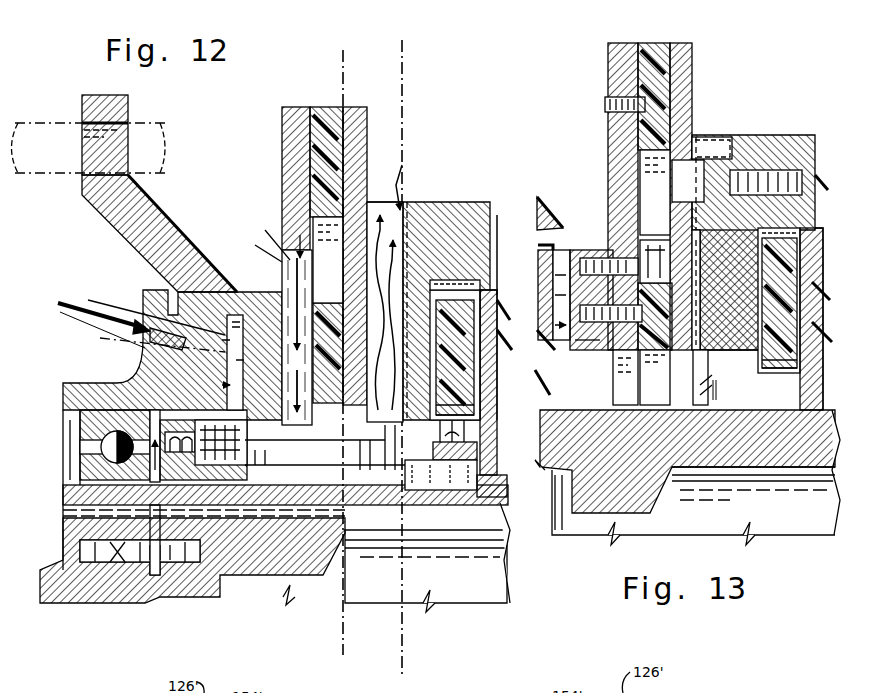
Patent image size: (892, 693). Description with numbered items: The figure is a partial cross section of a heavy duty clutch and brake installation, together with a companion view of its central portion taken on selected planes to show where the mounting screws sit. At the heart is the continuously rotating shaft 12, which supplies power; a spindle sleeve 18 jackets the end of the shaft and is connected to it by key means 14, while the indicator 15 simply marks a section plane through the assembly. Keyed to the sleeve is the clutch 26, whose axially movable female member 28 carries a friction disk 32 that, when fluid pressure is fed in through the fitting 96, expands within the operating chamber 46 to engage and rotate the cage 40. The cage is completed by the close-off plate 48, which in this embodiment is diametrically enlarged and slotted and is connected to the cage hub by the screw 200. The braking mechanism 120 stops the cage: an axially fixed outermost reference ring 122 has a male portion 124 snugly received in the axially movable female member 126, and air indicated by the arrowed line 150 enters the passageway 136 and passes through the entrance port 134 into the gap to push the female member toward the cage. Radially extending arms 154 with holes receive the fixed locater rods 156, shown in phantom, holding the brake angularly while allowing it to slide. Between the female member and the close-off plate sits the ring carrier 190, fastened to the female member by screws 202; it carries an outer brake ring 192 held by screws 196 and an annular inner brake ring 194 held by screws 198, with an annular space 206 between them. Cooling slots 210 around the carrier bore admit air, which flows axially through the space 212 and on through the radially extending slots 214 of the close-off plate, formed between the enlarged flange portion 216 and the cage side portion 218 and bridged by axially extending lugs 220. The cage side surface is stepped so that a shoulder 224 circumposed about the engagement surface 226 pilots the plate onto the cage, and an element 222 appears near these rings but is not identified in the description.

In FIG. 12, the shaft 12 is at (478, 603).
In FIG. 13, the shaft 12 is at (800, 535).
In FIG. 12, the key means 14 is at (360, 72).
In FIG. 12, the section line 15 is at (418, 45).
In FIG. 12, the spindle sleeve 18 is at (270, 560).
In FIG. 13, the spindle sleeve 18 is at (614, 465).
In FIG. 12, the clutch 26 is at (497, 305).
In FIG. 13, the clutch 26 is at (819, 245).
In FIG. 12, the female clutch member 28 is at (497, 350).
In FIG. 13, the female clutch member 28 is at (823, 385).
In FIG. 12, the friction disk 32 is at (497, 315).
In FIG. 13, the friction disk 32 is at (815, 312).
In FIG. 12, the cage 40 is at (476, 197).
In FIG. 13, the cage 40 is at (813, 130).
In FIG. 12, the operating chamber 46 is at (499, 250).
In FIG. 13, the operating chamber 46 is at (823, 200).
In FIG. 12, the close-off plate 48 is at (415, 200).
In FIG. 13, the close-off plate 48 is at (700, 135).
In FIG. 12, the fitting 96 is at (52, 570).
In FIG. 12, the braking mechanism 120 is at (128, 246).
In FIG. 13, the braking mechanism 120 is at (540, 400).
In FIG. 12, the outermost reference ring 122 is at (80, 383).
In FIG. 12, the male portion 124 is at (172, 304).
In FIG. 13, the male portion 124 is at (538, 262).
In FIG. 12, the female member 126 is at (150, 205).
In FIG. 13, the female member 126 is at (548, 200).
In FIG. 12, the entrance port 134 is at (227, 382).
In FIG. 12, the passageway 136 is at (185, 352).
In FIG. 12, the arrowed line 150 is at (68, 318).
In FIG. 12, the radially extending arms 154 is at (82, 100).
In FIG. 12, the locater rods 156 is at (72, 178).
In FIG. 12, the ring carrier 190 is at (290, 138).
In FIG. 13, the ring carrier 190 is at (613, 70).
In FIG. 12, the outer brake ring 192 is at (325, 110).
In FIG. 13, the outer brake ring 192 is at (650, 48).
In FIG. 12, the inner brake ring 194 is at (286, 350).
In FIG. 13, the inner brake ring 194 is at (618, 370).
In FIG. 13, the screws 196 is at (605, 105).
In FIG. 13, the screws 198 is at (592, 330).
In FIG. 13, the screw 200 is at (775, 168).
In FIG. 13, the screws 202 is at (598, 230).
In FIG. 12, the annular space 206 is at (313, 222).
In FIG. 13, the annular space 206 is at (640, 183).
In FIG. 12, the cooling slots 210 is at (275, 262).
In FIG. 12, the space 212 is at (332, 462).
In FIG. 13, the space 212 is at (665, 385).
In FIG. 12, the radially extending slots 214 is at (398, 165).
In FIG. 13, the radially extending slots 214 is at (700, 360).
In FIG. 12, the enlarged flange portion 216 is at (355, 107).
In FIG. 13, the enlarged flange portion 216 is at (682, 45).
In FIG. 13, the cage side portion 218 is at (740, 135).
In FIG. 12, the axially extending lugs 220 is at (405, 200).
In FIG. 13, the axially extending lugs 220 is at (722, 130).
In FIG. 12, the lower insert 222 is at (480, 392).
In FIG. 13, the lower insert 222 is at (765, 305).
In FIG. 12, the shoulder 224 is at (432, 285).
In FIG. 13, the shoulder 224 is at (765, 240).
In FIG. 12, the engagement surface 226 is at (478, 355).
In FIG. 13, the engagement surface 226 is at (765, 278).